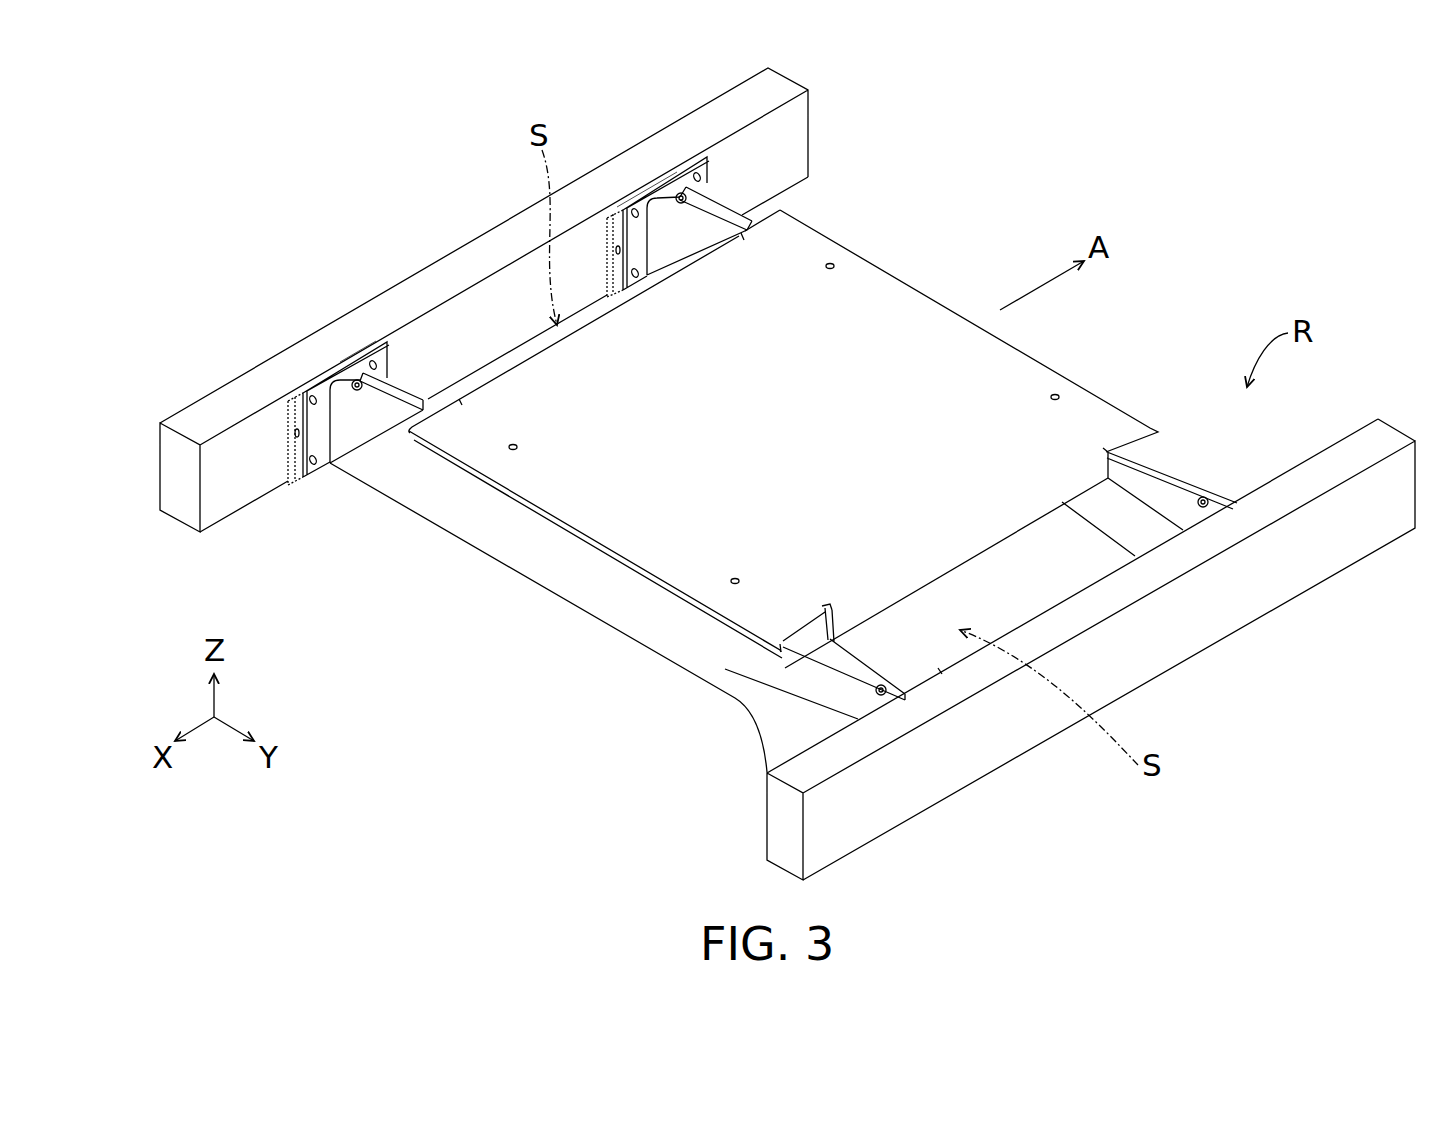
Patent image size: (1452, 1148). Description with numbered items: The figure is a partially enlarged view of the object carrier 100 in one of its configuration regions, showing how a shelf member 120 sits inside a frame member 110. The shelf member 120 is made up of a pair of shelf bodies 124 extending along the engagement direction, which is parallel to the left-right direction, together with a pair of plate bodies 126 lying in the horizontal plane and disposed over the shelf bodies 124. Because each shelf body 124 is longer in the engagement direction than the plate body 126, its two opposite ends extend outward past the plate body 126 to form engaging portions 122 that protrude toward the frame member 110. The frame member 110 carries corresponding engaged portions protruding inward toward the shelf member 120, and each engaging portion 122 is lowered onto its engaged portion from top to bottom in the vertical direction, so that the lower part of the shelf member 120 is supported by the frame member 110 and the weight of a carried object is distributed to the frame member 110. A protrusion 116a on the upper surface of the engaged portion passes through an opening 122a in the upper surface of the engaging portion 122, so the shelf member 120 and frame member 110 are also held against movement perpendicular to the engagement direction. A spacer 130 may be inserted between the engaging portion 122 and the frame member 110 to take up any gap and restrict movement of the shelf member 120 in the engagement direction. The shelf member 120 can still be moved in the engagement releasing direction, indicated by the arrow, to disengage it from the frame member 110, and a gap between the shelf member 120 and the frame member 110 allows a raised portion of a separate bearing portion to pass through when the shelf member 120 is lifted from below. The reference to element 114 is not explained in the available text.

The object carrier 100 is at (1405, 864).
The frame member 110 is at (787, 474).
The beam 114 is at (465, 282).
The protrusion 116a is at (680, 166).
The shelf member 120 is at (448, 637).
The engaging portion 122 is at (684, 256).
The opening 122a is at (692, 195).
The shelf body 124 is at (576, 582).
The plate body 126 is at (706, 528).
The spacer 130 is at (710, 158).